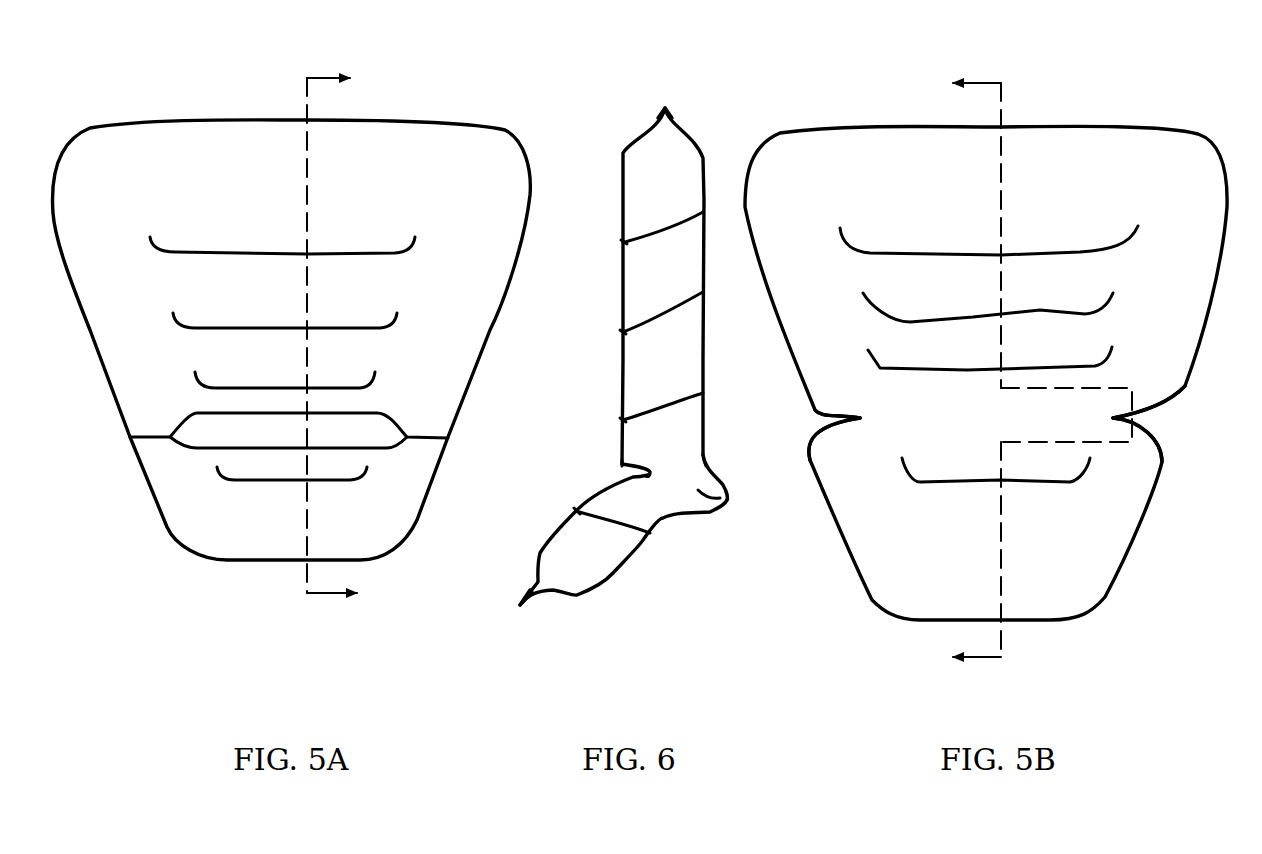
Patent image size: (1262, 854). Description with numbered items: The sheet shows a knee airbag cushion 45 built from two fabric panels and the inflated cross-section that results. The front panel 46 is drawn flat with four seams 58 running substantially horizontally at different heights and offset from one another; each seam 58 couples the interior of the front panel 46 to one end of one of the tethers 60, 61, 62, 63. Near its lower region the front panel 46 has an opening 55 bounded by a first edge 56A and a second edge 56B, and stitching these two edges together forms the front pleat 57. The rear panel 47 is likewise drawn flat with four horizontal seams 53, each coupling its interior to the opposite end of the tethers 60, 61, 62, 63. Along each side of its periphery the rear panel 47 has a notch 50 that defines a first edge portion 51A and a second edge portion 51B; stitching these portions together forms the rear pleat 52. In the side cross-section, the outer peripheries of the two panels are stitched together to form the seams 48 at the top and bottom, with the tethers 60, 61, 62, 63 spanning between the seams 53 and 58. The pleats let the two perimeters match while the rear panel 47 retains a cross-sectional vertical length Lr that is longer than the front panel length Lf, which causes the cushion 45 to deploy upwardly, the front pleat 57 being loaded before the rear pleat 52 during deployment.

In FIG. 6, the knee airbag cushion 45 is at (683, 106).
In FIG. 5A, the front panel 46 is at (158, 102).
In FIG. 6, the front panel 46 is at (620, 378).
In FIG. 6, the rear panel 47 is at (623, 563).
In FIG. 5B, the rear panel 47 is at (1102, 113).
In FIG. 6, the seam 48 is at (658, 112).
In FIG. 5B, the notch 50 is at (807, 422).
In FIG. 5B, the first edge portion 51A is at (827, 427).
In FIG. 5B, the second edge portion 51B is at (815, 407).
In FIG. 6, the rear pleat 52 is at (730, 504).
In FIG. 6, the seam 53 is at (703, 212).
In FIG. 5B, the seam 53 is at (915, 253).
In FIG. 5A, the opening 55 is at (224, 429).
In FIG. 5A, the first edge 56A is at (377, 412).
In FIG. 5A, the second edge 56B is at (387, 450).
In FIG. 6, the front pleat 57 is at (609, 470).
In FIG. 5A, the seam 58 is at (247, 252).
In FIG. 6, the seam 58 is at (625, 242).
In FIG. 6, the tether 60 is at (633, 530).
In FIG. 6, the tether 61 is at (634, 421).
In FIG. 6, the tether 62 is at (640, 325).
In FIG. 6, the tether 63 is at (643, 237).
In FIG. 6, the cross-sectional vertical length of the front panel Lf is at (620, 466).
In FIG. 6, the cross-sectional vertical length of the rear panel Lr is at (707, 465).